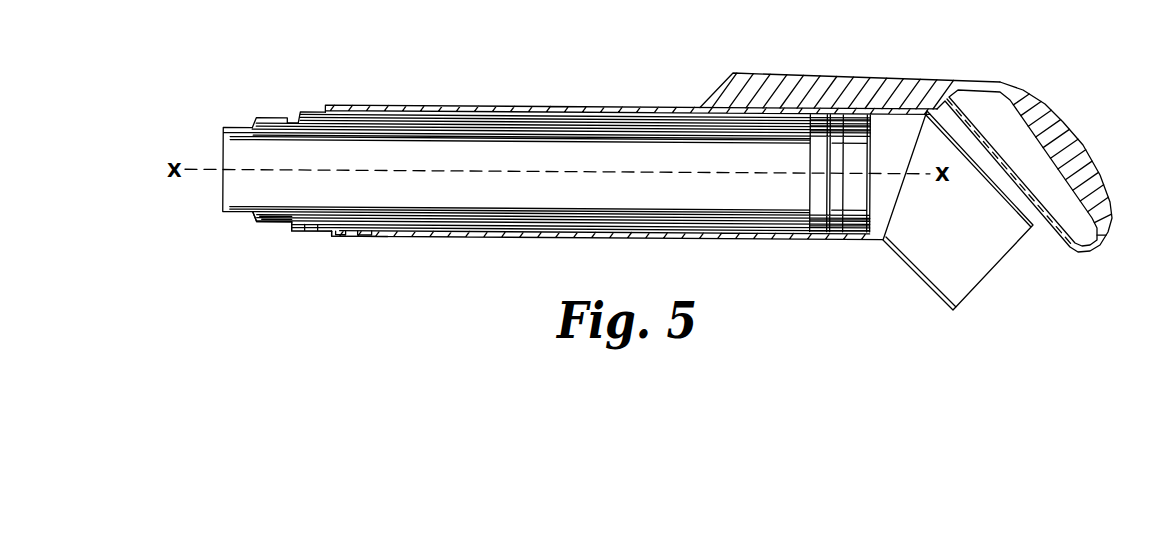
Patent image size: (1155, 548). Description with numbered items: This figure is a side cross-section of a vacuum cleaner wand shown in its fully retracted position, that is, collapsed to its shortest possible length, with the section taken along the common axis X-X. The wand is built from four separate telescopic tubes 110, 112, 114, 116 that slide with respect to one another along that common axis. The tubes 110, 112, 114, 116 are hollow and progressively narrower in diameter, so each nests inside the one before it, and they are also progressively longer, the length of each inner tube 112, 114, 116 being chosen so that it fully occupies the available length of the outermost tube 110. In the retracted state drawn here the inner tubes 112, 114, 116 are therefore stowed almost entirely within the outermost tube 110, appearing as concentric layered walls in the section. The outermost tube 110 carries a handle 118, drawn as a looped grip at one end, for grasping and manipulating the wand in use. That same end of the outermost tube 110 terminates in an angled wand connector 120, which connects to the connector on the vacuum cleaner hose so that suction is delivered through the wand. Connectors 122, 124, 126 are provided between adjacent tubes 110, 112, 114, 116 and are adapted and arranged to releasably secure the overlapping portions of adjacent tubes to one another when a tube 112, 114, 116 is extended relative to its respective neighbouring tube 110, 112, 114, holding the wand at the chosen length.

The outermost tube 110 is at (553, 110).
The telescopic tube 112 is at (462, 115).
The telescopic tube 114 is at (383, 118).
The telescopic tube 116 is at (232, 128).
The handle 118 is at (940, 88).
The wand connector 120 is at (922, 277).
The connector 122 is at (357, 233).
The connector 124 is at (317, 233).
The connector 126 is at (273, 225).